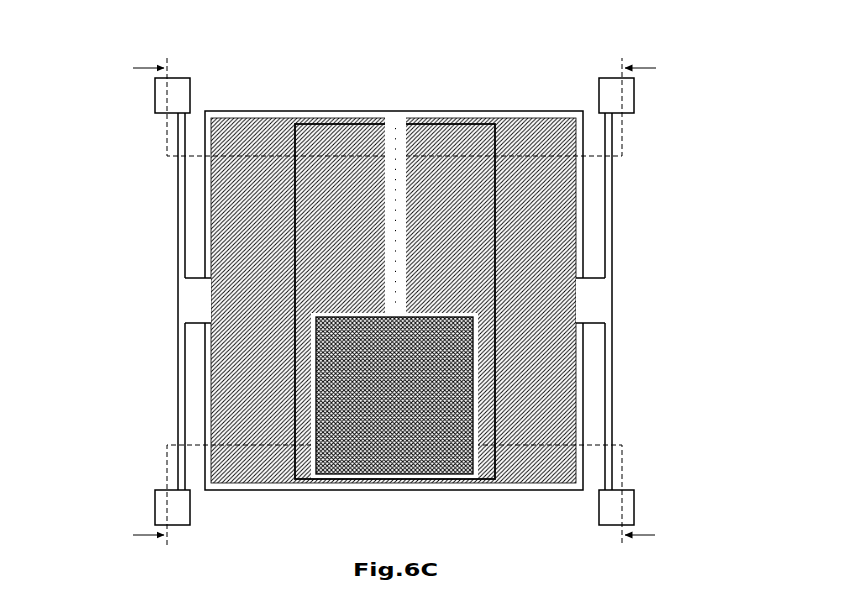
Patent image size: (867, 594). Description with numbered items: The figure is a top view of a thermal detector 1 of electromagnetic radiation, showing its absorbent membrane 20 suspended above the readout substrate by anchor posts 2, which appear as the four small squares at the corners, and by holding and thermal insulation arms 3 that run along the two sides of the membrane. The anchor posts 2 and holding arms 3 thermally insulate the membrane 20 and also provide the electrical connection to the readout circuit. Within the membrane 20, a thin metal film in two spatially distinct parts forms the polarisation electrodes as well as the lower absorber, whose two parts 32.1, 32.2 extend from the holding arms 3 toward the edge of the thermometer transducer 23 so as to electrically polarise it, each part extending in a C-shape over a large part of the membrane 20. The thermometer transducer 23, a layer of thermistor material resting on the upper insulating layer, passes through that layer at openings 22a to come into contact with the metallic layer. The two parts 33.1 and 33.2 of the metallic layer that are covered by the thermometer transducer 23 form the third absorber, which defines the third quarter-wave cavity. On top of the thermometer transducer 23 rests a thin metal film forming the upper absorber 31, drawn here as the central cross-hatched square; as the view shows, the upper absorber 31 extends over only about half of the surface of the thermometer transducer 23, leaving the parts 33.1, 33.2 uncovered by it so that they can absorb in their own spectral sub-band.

The thermal detector 1 is at (386, 305).
The anchor posts 2 is at (629, 87).
The holding and thermal insulation arms 3 is at (607, 387).
The absorbent membrane 20 is at (394, 291).
The openings 22a is at (290, 116).
The thermometer transducer 23 is at (388, 110).
The upper absorber 31 is at (387, 457).
The first part of the lower absorber 32.1 is at (243, 472).
The second part of the lower absorber 32.2 is at (535, 470).
The first part of the third absorber 33.1 is at (328, 163).
The second part of the third absorber 33.2 is at (430, 163).